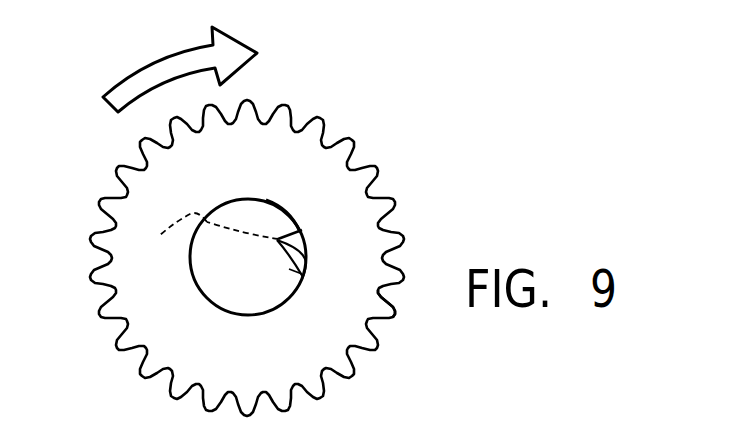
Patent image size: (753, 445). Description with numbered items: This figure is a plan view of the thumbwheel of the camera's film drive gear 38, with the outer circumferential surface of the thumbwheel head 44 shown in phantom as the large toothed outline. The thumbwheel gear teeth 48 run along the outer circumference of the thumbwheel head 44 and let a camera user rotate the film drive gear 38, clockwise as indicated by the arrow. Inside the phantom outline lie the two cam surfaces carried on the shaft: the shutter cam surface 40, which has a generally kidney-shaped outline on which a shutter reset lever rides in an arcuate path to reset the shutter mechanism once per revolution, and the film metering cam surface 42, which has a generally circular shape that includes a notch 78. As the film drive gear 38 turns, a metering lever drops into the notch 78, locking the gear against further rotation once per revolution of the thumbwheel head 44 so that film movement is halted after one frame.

The film drive gear 38 is at (393, 112).
The shutter cam surface 40 is at (303, 266).
The film metering cam surface 42 is at (266, 198).
The thumbwheel head 44 is at (140, 300).
The thumbwheel gear teeth 48 is at (392, 315).
The notch 78 is at (302, 246).